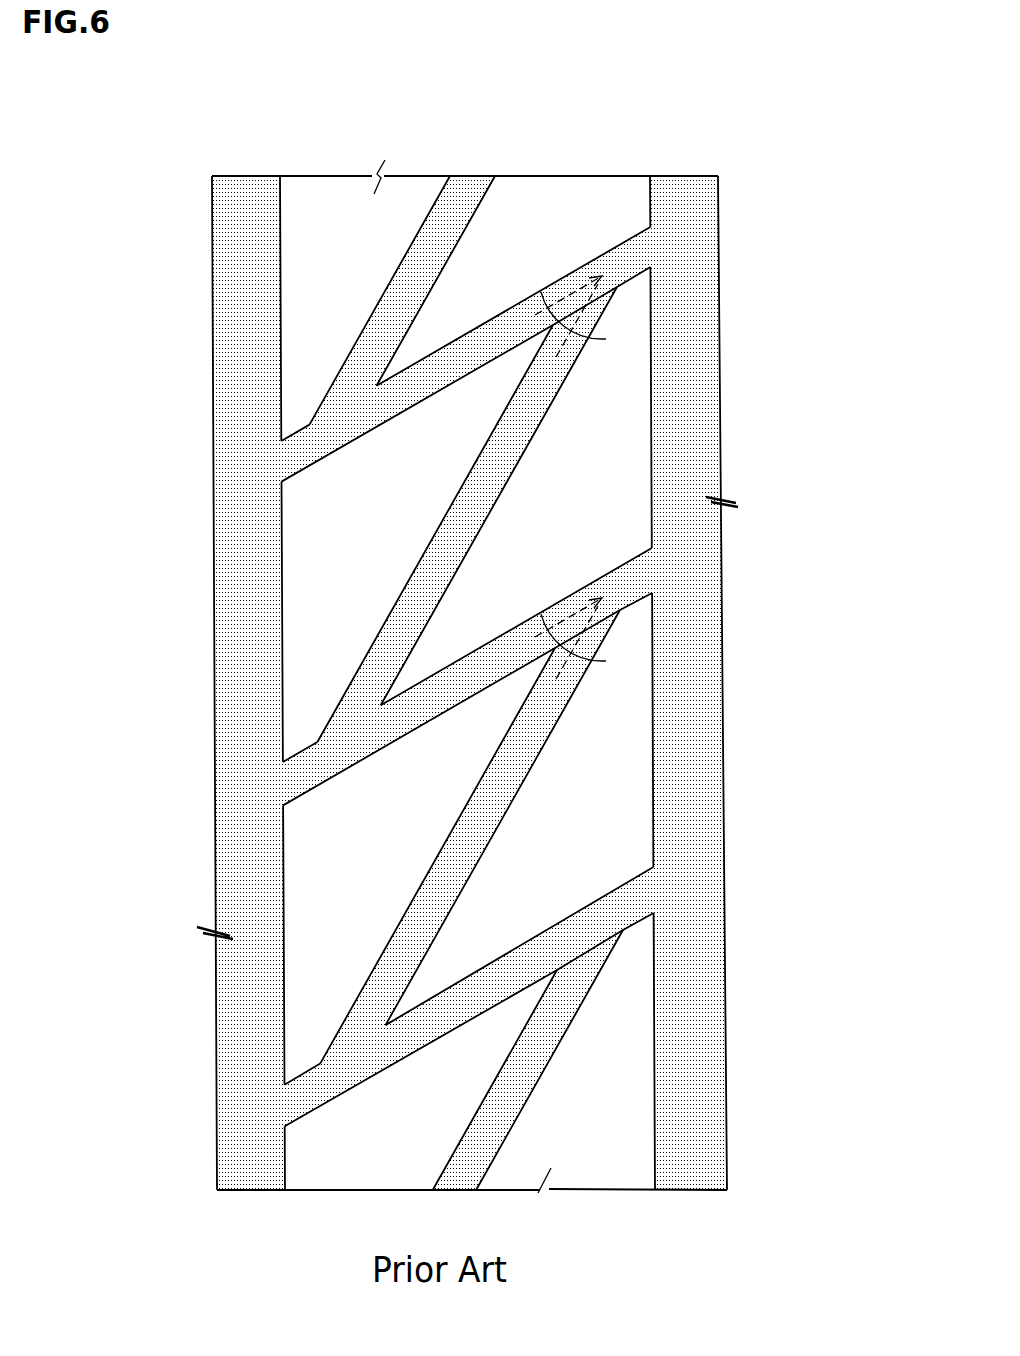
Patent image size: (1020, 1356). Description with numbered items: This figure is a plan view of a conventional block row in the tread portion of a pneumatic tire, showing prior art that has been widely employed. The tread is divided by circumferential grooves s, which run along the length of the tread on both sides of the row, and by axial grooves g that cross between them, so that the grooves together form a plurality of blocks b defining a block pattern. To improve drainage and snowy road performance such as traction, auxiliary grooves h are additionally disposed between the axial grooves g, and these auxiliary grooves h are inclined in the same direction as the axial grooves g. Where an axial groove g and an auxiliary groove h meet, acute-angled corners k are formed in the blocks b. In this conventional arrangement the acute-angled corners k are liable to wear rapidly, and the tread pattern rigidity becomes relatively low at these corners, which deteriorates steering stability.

The circumferential groove s is at (248, 210).
The axial groove g is at (473, 345).
The auxiliary groove h is at (430, 578).
The acute-angled corner k is at (504, 382).
The block b is at (638, 314).